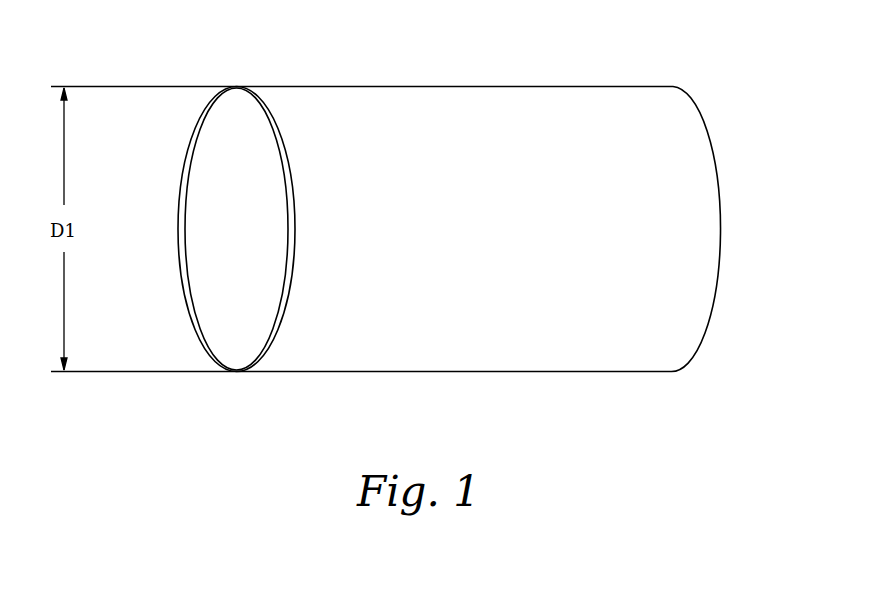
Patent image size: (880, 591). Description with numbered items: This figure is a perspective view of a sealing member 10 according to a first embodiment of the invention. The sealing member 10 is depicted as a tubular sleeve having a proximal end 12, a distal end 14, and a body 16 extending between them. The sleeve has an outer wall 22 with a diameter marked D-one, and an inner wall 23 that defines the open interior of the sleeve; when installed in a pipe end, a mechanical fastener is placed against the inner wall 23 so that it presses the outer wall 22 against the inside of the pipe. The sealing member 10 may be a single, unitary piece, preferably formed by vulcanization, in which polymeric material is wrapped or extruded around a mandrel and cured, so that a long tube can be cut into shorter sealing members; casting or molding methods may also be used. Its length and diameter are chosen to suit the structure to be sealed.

The sealing member 10 is at (214, 48).
The proximal end 12 is at (201, 116).
The distal end 14 is at (692, 103).
The body 16 is at (490, 95).
The outer wall 22 is at (533, 353).
The inner wall 23 is at (210, 213).